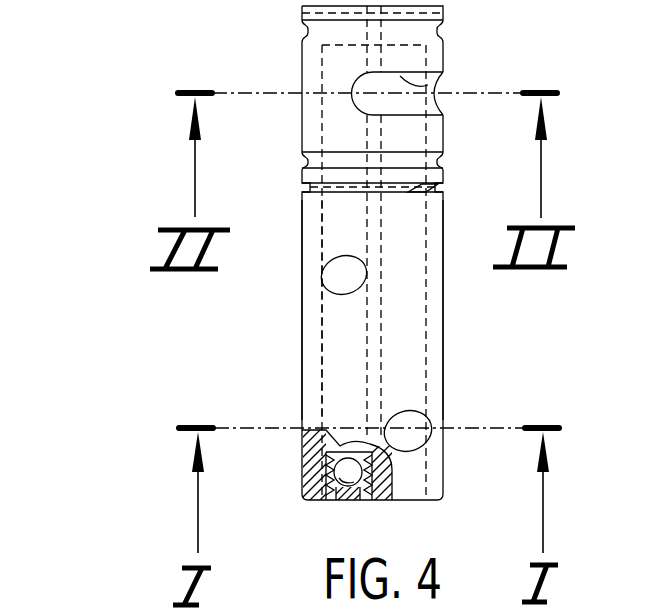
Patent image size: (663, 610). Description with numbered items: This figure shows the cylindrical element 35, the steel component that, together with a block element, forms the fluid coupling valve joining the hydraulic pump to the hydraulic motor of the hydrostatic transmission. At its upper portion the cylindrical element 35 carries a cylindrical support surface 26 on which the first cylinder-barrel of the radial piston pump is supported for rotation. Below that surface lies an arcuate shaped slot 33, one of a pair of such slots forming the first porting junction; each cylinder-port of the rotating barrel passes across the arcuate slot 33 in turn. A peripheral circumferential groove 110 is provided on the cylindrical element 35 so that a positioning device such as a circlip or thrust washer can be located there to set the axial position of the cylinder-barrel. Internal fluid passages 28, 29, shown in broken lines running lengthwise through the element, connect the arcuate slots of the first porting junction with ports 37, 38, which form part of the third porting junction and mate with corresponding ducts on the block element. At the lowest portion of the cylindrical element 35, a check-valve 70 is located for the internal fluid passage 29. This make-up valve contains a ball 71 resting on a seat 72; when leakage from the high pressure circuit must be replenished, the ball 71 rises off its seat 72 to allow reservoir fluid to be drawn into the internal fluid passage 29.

The cylindrical support surface 26 is at (302, 91).
The internal fluid passage 28 is at (421, 317).
The internal fluid passage 29 is at (327, 358).
The arcuate shaped slot 33 is at (428, 79).
The cylindrical element 35 is at (445, 343).
The port 37 is at (418, 427).
The port 38 is at (333, 274).
The check-valve 70 is at (320, 498).
The ball 71 is at (314, 457).
The seat 72 is at (378, 497).
The peripheral circumferential groove 110 is at (440, 175).